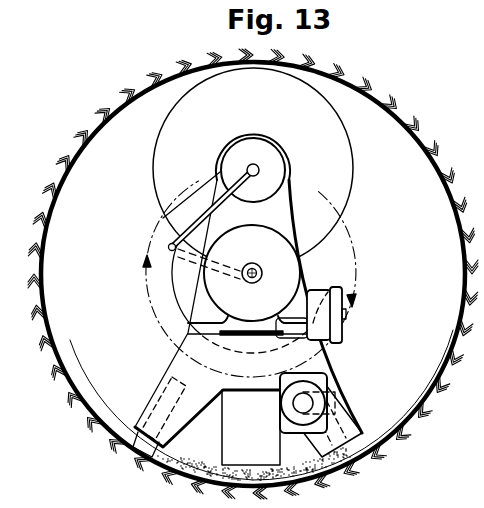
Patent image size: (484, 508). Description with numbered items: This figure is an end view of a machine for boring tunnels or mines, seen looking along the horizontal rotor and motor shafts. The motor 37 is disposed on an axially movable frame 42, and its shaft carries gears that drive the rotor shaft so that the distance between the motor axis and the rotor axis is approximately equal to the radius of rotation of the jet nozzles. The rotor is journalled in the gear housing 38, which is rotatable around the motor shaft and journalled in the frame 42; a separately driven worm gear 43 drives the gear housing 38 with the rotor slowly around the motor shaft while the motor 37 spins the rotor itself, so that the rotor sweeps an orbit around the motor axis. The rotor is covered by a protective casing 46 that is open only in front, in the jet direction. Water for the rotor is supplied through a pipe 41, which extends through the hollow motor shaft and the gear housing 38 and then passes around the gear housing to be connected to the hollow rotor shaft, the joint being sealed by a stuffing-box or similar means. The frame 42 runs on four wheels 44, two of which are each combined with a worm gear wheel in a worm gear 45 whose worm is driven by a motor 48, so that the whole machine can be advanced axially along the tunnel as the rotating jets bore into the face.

The motor 37 is at (290, 261).
The gear housing 38 is at (299, 218).
The pipe 41 is at (188, 227).
The frame 42 is at (183, 369).
The worm gear 43 is at (346, 313).
The wheels 44 is at (368, 452).
The worm gear 45 is at (345, 481).
The protective casing 46 is at (342, 163).
The motor 48 is at (318, 377).